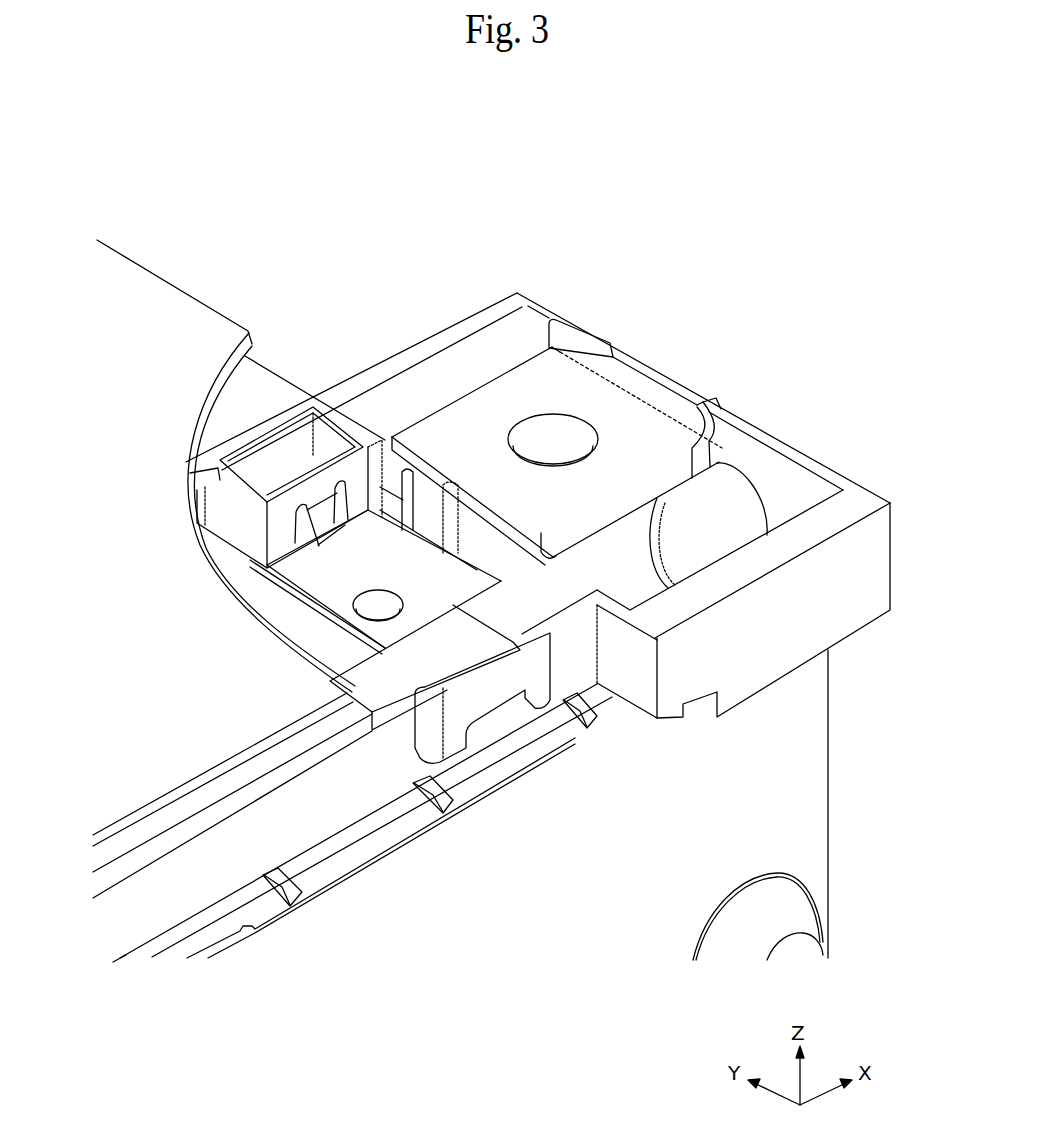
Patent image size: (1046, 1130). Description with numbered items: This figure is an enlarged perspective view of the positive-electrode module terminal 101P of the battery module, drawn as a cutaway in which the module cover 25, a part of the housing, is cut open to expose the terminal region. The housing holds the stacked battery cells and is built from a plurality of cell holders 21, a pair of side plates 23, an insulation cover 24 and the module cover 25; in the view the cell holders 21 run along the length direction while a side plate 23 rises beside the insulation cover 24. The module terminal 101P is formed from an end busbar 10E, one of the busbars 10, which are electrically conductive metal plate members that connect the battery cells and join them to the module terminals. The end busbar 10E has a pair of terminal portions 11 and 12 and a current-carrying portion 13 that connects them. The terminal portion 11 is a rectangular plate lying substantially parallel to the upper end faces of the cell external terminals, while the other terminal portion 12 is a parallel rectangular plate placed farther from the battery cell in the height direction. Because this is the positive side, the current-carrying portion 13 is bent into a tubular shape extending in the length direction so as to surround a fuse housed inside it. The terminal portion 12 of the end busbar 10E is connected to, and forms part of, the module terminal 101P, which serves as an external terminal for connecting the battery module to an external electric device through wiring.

The positive-electrode module terminal 101P is at (591, 211).
The module cover 25 is at (150, 302).
The end busbar 10E is at (452, 421).
The busbar 10 is at (468, 584).
The terminal portion 11 is at (393, 545).
The terminal portion 12 is at (510, 400).
The current-carrying portion 13 is at (727, 472).
The insulation cover 24 is at (858, 496).
The side plate 23 is at (797, 780).
The cell holder 21 is at (610, 705).